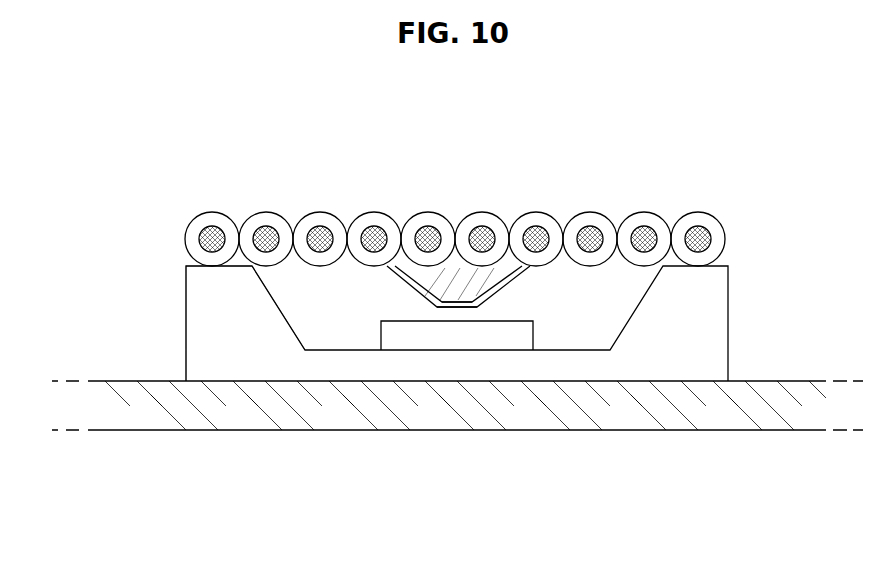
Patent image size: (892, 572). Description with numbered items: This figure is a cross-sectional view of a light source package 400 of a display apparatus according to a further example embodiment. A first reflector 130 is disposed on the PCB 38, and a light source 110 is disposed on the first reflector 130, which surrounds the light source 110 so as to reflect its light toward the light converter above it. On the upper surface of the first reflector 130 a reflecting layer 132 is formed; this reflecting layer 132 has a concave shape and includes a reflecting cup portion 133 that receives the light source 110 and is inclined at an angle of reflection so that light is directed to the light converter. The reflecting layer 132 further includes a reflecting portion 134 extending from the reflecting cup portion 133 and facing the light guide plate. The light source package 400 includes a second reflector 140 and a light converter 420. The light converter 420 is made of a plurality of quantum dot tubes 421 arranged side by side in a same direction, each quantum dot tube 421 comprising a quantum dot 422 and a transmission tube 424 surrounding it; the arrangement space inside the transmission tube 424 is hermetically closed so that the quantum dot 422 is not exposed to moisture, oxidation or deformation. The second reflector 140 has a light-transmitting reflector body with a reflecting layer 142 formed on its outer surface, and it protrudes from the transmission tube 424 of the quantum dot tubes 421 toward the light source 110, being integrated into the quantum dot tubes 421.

The light source package 400 is at (395, 375).
The light converter 420 is at (474, 202).
The quantum dot tube 421 is at (603, 210).
The quantum dot 422 is at (495, 205).
The transmission tube 424 is at (478, 222).
The first reflector 130 is at (672, 357).
The reflecting layer 132 is at (231, 396).
The reflecting cup portion 133 is at (274, 298).
The reflecting portion 134 is at (205, 266).
The light source 110 is at (405, 338).
The second reflector 140 is at (458, 371).
The reflecting layer 142 is at (441, 312).
The PCB 38 is at (592, 418).